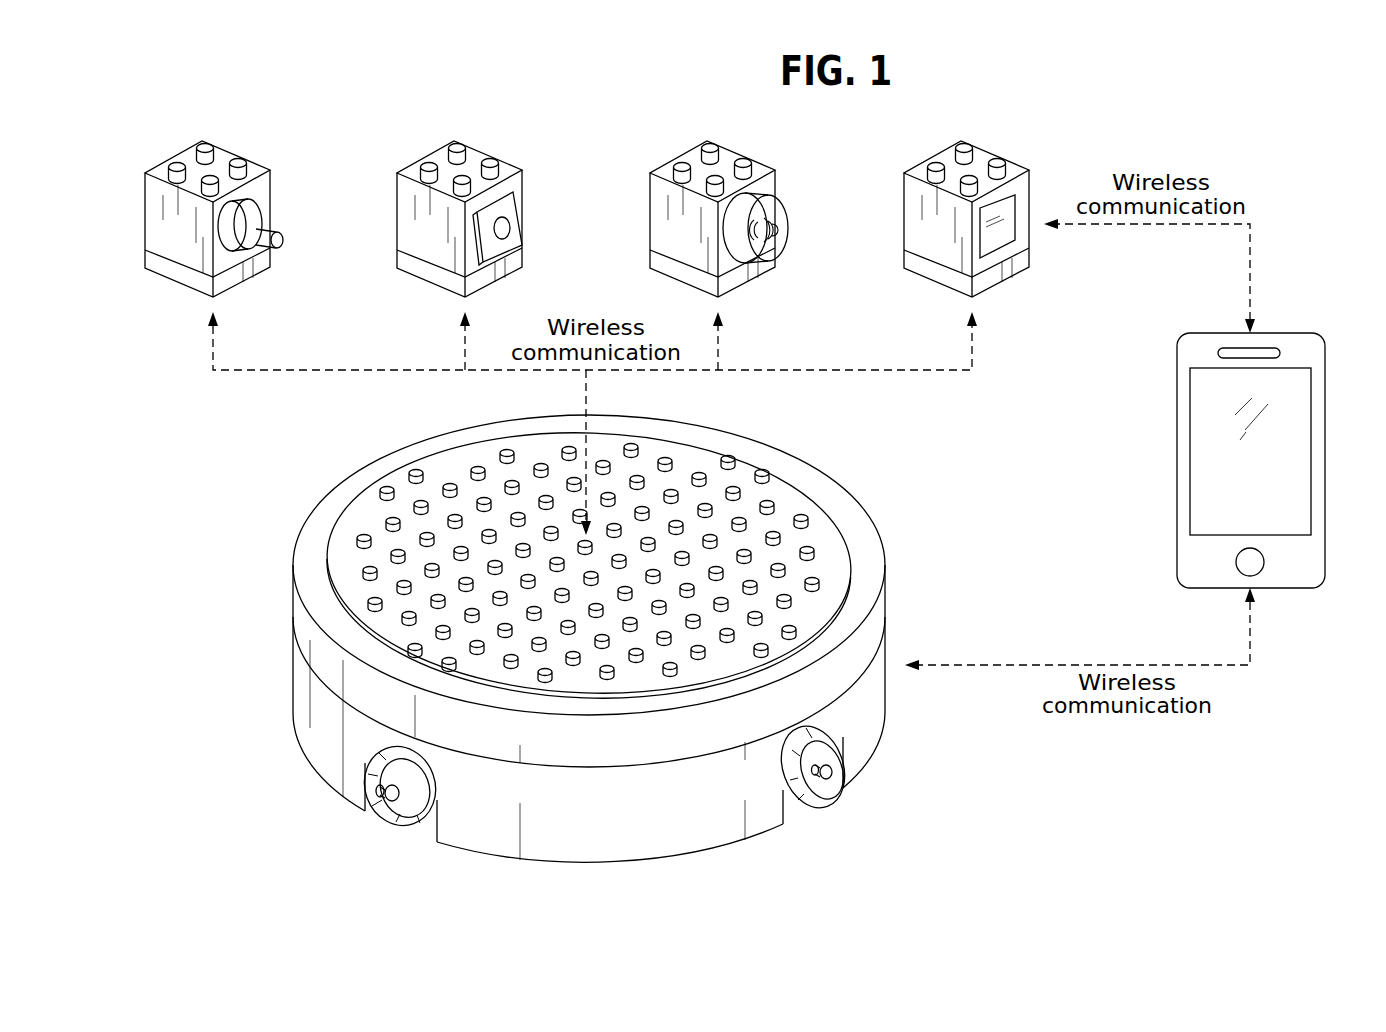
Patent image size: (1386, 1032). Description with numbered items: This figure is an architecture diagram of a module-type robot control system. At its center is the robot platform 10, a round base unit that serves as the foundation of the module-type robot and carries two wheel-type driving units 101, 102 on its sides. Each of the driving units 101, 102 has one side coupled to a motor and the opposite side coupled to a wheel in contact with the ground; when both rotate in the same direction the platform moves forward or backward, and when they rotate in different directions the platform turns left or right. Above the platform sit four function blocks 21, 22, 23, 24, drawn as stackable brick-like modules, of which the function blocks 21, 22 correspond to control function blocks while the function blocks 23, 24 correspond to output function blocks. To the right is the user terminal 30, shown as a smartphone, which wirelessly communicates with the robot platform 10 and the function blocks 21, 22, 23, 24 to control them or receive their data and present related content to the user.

The robot platform 10 is at (293, 695).
The driving unit 101 is at (392, 804).
The driving unit 102 is at (822, 793).
The function block 21 is at (190, 143).
The function block 22 is at (477, 153).
The function block 23 is at (692, 153).
The function block 24 is at (980, 155).
The user terminal 30 is at (1294, 333).